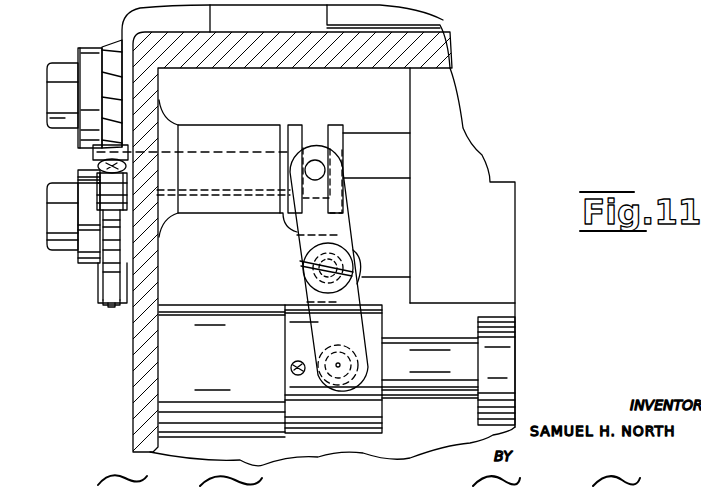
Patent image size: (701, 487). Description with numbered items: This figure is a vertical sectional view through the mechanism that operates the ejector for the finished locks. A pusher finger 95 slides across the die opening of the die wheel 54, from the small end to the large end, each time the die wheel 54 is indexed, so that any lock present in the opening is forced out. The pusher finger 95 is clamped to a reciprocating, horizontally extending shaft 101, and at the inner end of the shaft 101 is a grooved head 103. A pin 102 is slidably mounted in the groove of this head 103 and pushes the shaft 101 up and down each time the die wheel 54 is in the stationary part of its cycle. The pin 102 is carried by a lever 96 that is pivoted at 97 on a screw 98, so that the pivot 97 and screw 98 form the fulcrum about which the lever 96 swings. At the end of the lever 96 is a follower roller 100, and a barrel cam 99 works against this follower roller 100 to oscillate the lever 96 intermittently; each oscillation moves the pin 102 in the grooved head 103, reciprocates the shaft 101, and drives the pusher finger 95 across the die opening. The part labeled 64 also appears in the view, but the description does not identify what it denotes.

The die wheel 54 is at (115, 48).
The pusher finger 95 is at (95, 168).
The screw stem 64 is at (110, 307).
The shaft 101 is at (196, 145).
The grooved head 103 is at (337, 125).
The pin 102 is at (330, 166).
The lever 96 is at (356, 229).
The screw 98 is at (357, 248).
The pivot 97 is at (304, 275).
The follower roller 100 is at (337, 388).
The barrel cam 99 is at (362, 421).